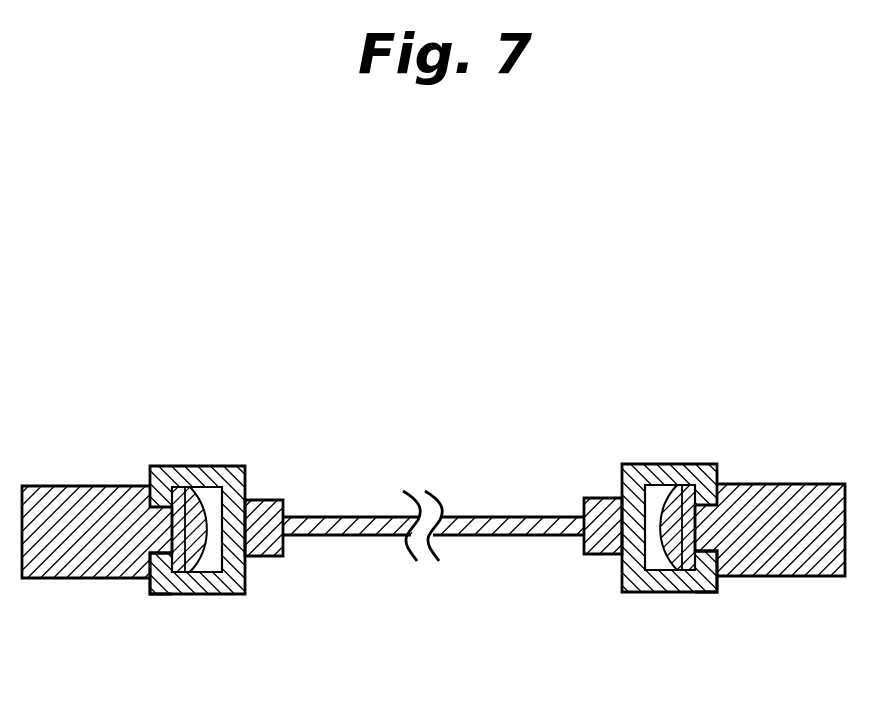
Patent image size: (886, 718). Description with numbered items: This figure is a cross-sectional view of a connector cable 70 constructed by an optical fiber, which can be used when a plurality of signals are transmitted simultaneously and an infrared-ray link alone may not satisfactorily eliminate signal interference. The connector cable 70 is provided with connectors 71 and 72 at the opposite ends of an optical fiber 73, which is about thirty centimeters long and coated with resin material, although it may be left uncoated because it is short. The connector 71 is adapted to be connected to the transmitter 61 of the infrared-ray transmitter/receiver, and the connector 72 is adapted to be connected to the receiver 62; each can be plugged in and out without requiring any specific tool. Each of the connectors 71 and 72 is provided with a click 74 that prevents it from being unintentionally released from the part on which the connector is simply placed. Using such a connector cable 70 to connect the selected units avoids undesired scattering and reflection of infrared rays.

The connector cable 70 is at (524, 298).
The transmitter 61 is at (34, 506).
The receiver 62 is at (790, 497).
The connector 71 is at (197, 466).
The connector 72 is at (663, 464).
The optical fiber 73 is at (514, 523).
The click 74 is at (148, 585).